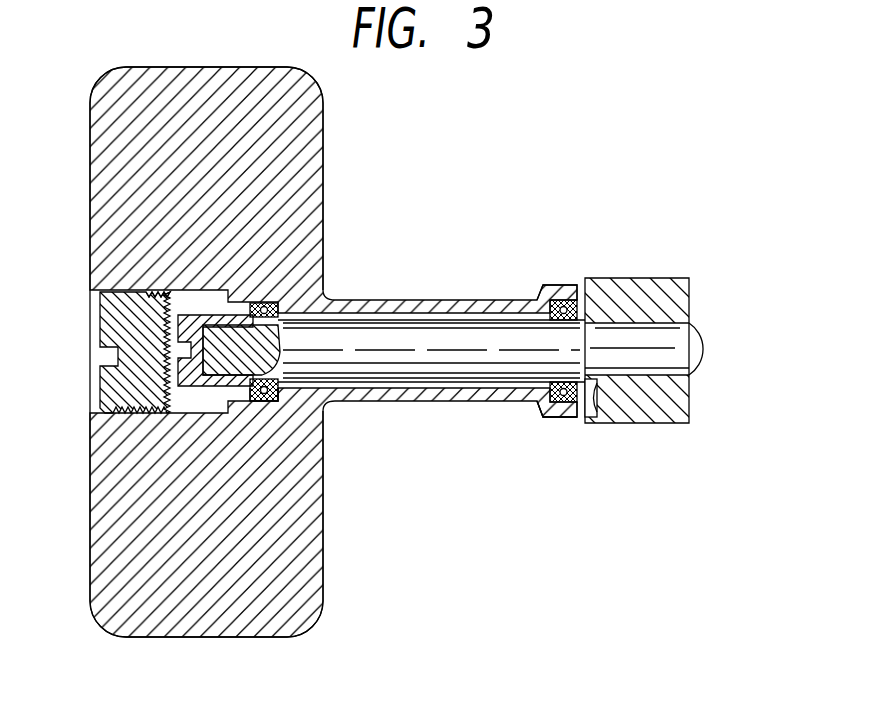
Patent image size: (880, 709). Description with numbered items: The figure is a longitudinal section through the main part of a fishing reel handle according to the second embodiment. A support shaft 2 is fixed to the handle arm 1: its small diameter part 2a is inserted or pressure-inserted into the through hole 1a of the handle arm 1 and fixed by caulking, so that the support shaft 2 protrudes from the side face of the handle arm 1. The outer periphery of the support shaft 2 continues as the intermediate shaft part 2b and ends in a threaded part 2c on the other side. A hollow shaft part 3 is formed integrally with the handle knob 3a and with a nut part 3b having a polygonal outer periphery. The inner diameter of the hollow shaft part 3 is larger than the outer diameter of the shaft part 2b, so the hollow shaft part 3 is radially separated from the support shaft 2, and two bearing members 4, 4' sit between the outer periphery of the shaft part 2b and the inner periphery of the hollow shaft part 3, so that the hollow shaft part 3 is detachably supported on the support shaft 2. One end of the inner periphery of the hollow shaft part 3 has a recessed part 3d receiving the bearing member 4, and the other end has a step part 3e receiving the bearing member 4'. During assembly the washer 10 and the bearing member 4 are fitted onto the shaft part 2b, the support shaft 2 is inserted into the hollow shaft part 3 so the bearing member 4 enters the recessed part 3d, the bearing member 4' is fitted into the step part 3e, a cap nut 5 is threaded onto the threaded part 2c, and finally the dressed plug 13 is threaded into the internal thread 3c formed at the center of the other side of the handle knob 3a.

The handle arm 1 is at (653, 271).
The through hole 1a is at (702, 366).
The support shaft 2 is at (401, 308).
The small diameter part 2a is at (673, 337).
The shaft part 2b is at (432, 328).
The threaded part 2c is at (205, 386).
The hollow shaft part 3 is at (471, 292).
The handle knob 3a is at (313, 128).
The nut part 3b is at (560, 283).
The internal thread 3c is at (118, 310).
The recessed part 3d is at (546, 415).
The step part 3e is at (267, 402).
The bearing member 4 is at (563, 410).
The bearing member 4' is at (319, 426).
The cap nut 5 is at (180, 368).
The washer 10 is at (591, 417).
The dressed plug 13 is at (110, 392).